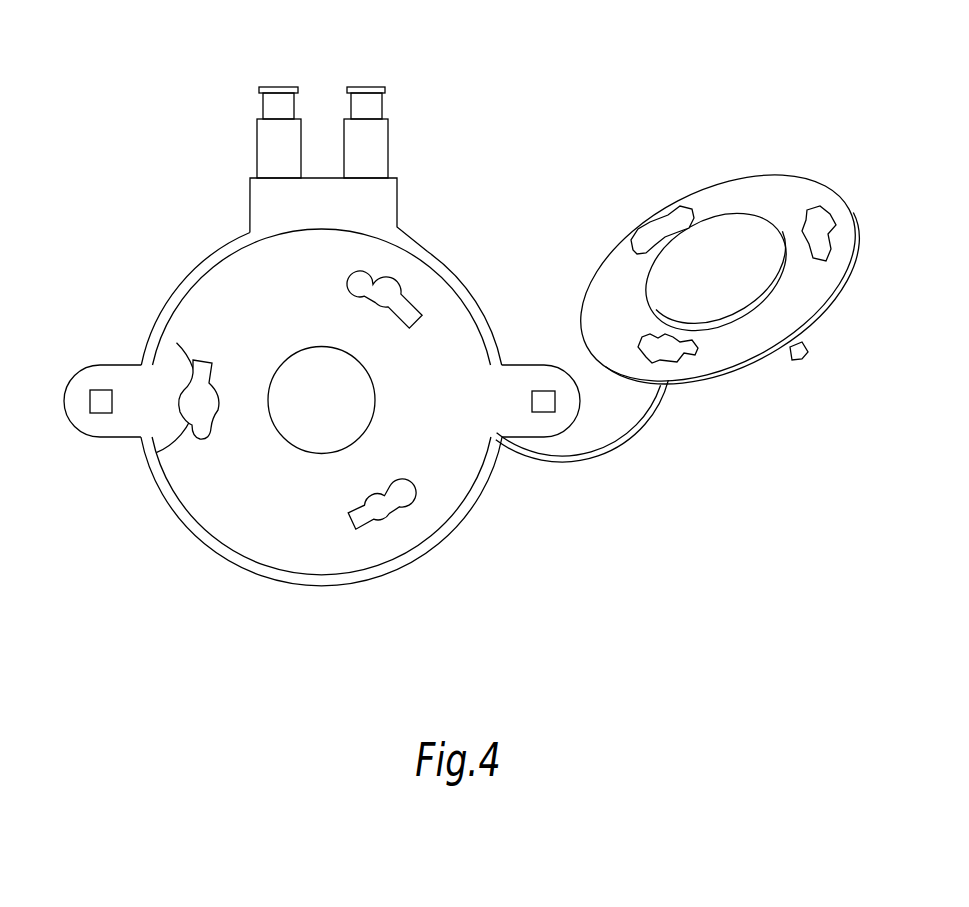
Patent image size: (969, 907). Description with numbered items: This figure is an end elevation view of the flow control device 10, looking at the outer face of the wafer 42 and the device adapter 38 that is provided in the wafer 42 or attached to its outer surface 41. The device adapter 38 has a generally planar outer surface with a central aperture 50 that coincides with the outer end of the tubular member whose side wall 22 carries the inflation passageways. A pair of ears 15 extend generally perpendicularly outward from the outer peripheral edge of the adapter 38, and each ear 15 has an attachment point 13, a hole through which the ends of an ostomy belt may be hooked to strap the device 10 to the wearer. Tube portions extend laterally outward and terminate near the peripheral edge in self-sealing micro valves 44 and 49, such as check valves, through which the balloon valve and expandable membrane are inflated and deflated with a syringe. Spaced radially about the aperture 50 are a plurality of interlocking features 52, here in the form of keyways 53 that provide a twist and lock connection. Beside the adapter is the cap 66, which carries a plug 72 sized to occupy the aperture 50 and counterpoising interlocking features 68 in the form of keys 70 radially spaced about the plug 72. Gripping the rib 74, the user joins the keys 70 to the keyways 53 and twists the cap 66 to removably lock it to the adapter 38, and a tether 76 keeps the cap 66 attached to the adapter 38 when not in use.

The flow control device 10 is at (185, 65).
The attachment point 13 is at (100, 400).
The ear 15 is at (100, 367).
The side wall 22 is at (376, 406).
The device adapter 38 is at (161, 307).
The outer surface 41 is at (440, 538).
The wafer 42 is at (192, 272).
The self-sealing micro valve 44 is at (383, 143).
The self-sealing micro valve 49 is at (262, 129).
The aperture 50 is at (292, 357).
The interlocking feature 52 is at (192, 363).
The keyway 53 is at (172, 444).
The cap 66 is at (800, 172).
The counterpoising interlocking feature 68 is at (645, 221).
The key 70 is at (640, 240).
The plug 72 is at (660, 290).
The rib 74 is at (803, 352).
The tether 76 is at (642, 425).